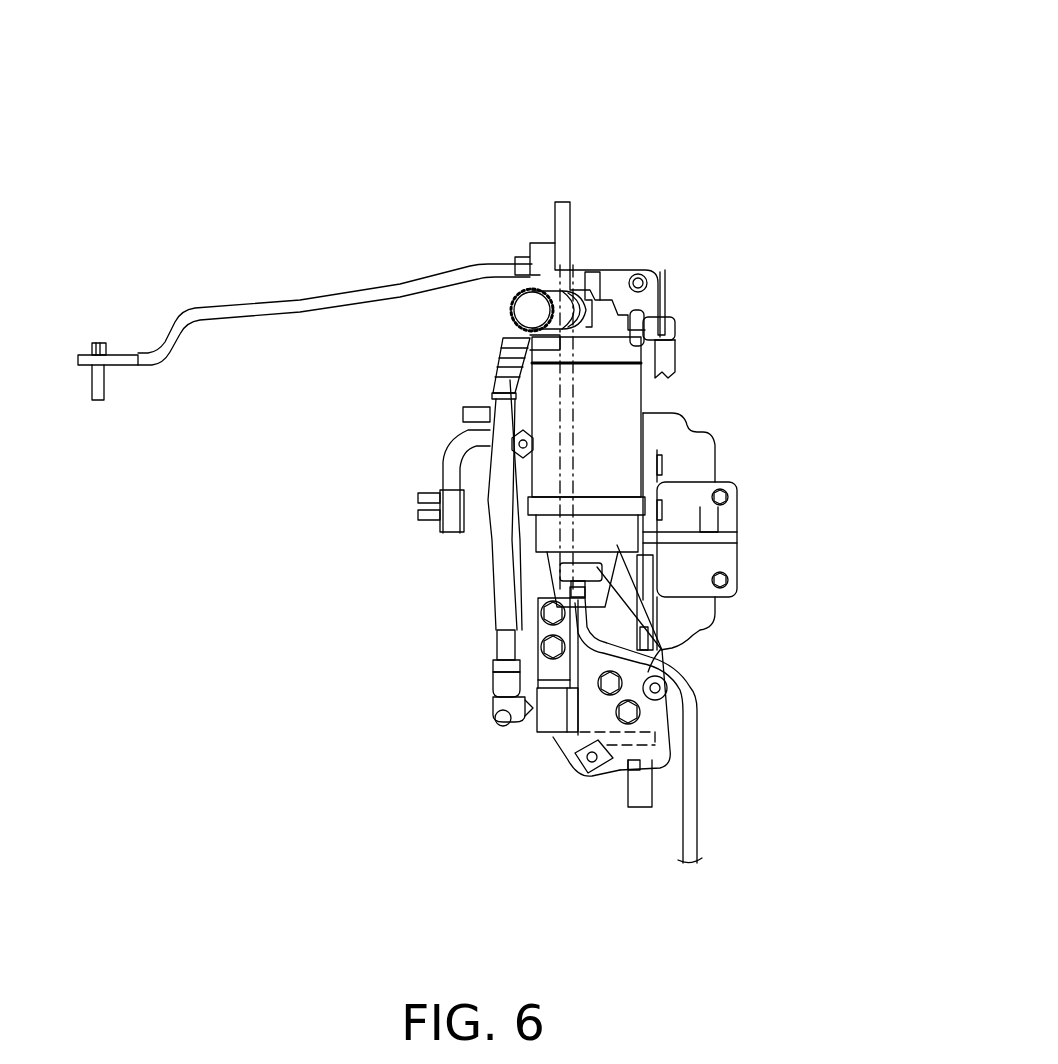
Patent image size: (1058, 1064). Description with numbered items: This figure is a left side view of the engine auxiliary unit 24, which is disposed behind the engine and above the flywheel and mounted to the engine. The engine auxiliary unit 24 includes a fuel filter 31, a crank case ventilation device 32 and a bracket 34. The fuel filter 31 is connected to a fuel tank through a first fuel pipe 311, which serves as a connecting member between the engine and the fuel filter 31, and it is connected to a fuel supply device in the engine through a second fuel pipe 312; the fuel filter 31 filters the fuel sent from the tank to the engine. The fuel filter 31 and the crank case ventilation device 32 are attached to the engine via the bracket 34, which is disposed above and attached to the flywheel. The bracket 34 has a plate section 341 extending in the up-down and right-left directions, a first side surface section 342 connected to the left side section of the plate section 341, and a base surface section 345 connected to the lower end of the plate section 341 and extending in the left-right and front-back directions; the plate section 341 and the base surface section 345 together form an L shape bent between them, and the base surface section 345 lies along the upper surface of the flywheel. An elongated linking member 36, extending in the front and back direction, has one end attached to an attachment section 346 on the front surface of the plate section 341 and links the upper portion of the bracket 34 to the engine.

The engine auxiliary unit 24 is at (663, 137).
The fuel filter 31 is at (613, 403).
The crank case ventilation device 32 is at (703, 458).
The bracket 34 is at (598, 228).
The linking member 36 is at (270, 300).
The first fuel pipe 311 is at (672, 382).
The second fuel pipe 312 is at (498, 557).
The plate section 341 is at (545, 380).
The first side surface section 342 is at (552, 590).
The base surface section 345 is at (622, 772).
The attachment section 346 is at (522, 297).